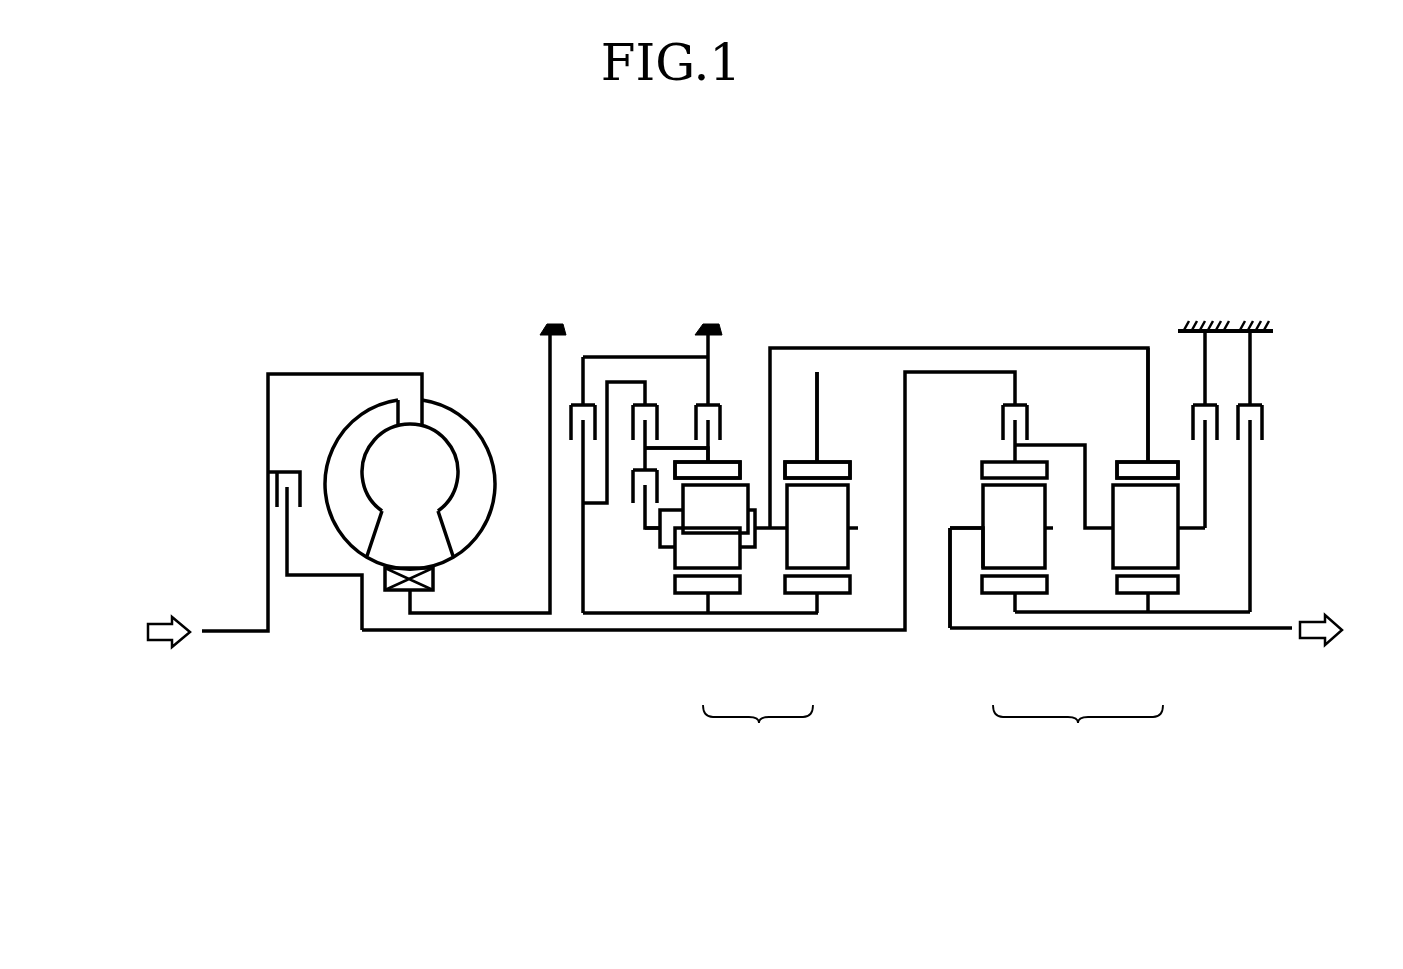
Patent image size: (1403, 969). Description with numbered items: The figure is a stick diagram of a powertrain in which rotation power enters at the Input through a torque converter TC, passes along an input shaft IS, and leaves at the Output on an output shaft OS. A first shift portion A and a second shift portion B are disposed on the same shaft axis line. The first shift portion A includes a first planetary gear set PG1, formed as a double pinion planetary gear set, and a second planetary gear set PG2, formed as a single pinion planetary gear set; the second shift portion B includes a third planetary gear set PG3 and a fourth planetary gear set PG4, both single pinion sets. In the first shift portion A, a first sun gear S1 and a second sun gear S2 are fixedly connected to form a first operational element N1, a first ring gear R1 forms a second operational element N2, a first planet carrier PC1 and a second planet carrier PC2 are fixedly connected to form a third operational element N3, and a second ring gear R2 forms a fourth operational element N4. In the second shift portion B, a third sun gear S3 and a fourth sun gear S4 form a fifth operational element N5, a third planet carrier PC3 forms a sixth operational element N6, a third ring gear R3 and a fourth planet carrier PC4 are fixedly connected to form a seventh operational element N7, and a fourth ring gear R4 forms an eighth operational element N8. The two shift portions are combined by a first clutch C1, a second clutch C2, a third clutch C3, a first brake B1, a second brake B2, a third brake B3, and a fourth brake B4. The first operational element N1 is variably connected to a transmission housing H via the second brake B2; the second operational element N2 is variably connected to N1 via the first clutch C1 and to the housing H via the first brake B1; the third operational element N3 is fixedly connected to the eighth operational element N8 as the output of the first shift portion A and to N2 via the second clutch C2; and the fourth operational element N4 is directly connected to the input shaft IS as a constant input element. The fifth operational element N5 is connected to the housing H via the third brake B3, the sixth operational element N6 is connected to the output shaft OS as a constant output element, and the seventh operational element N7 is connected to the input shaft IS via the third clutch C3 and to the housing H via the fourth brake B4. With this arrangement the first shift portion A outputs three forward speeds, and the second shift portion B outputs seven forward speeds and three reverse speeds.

The torque converter TC is at (447, 397).
The input shaft IS is at (629, 633).
The output shaft OS is at (1258, 632).
The input Input is at (264, 510).
The output Output is at (1346, 630).
The transmission housing H is at (551, 323).
The first brake B1 is at (703, 398).
The second brake B2 is at (632, 485).
The third brake B3 is at (1244, 471).
The fourth brake B4 is at (1197, 429).
The first clutch C1 is at (670, 427).
The second clutch C2 is at (635, 499).
The third clutch C3 is at (1008, 422).
The first planetary gear set PG1 is at (699, 562).
The second planetary gear set PG2 is at (821, 536).
The third planetary gear set PG3 is at (988, 566).
The fourth planetary gear set PG4 is at (1147, 524).
The first ring gear R1 is at (726, 461).
The second ring gear R2 is at (835, 461).
The third ring gear R3 is at (994, 461).
The fourth ring gear R4 is at (1130, 461).
The first sun gear S1 is at (675, 585).
The second sun gear S2 is at (850, 583).
The third sun gear S3 is at (1013, 633).
The fourth sun gear S4 is at (1179, 583).
The first planet carrier PC1 is at (656, 530).
The second planet carrier PC2 is at (777, 530).
The third planet carrier PC3 is at (956, 525).
The fourth planet carrier PC4 is at (1095, 529).
The first operational element N1 is at (744, 615).
The second operational element N2 is at (692, 463).
The third operational element N3 is at (768, 407).
The fourth operational element N4 is at (817, 425).
The fifth operational element N5 is at (1052, 614).
The sixth operational element N6 is at (966, 578).
The seventh operational element N7 is at (1061, 444).
The eighth operational element N8 is at (1147, 413).
The first shift portion A is at (758, 725).
The second shift portion B is at (1078, 725).